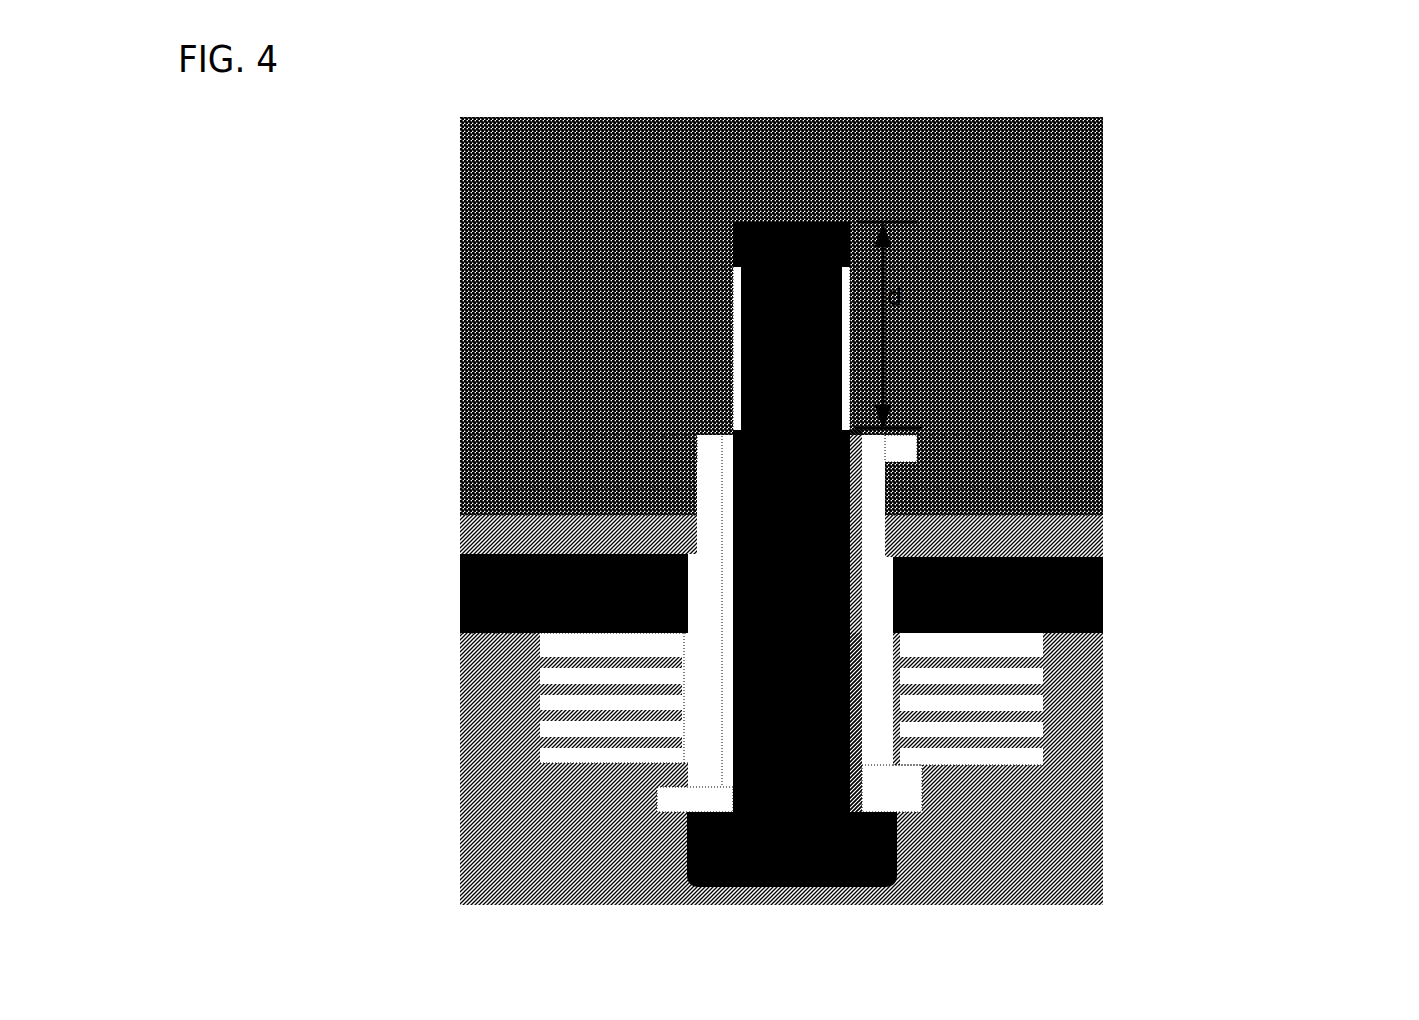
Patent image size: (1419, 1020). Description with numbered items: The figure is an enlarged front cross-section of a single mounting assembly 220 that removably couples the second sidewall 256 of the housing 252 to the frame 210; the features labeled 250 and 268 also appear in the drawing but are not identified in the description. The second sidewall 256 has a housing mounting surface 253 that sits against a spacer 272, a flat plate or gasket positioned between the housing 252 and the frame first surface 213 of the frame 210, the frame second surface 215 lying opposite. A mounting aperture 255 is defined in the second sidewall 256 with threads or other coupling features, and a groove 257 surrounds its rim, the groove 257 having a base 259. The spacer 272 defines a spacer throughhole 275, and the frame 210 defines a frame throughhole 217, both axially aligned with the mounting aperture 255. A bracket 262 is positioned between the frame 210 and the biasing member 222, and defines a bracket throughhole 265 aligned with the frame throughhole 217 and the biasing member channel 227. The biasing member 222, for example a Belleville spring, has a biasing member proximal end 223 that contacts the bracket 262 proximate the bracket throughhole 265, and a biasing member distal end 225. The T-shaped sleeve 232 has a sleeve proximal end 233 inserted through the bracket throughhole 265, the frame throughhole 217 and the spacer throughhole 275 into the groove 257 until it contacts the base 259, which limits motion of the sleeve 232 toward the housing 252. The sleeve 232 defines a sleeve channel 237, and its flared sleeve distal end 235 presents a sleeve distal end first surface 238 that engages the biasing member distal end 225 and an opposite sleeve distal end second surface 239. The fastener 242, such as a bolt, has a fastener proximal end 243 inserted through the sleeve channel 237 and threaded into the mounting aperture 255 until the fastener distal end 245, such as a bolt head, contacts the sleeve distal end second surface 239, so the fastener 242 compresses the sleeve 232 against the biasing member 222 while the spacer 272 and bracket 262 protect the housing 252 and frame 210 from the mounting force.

The upper housing assembly 250 is at (1046, 106).
The housing 252 is at (507, 172).
The mounting aperture 255 is at (735, 298).
The base of the groove 259 is at (703, 425).
The spacer throughhole 275 is at (693, 492).
The frame throughhole 217 is at (690, 528).
The spacer 272 is at (525, 492).
The interface layer 268 is at (500, 510).
The frame first surface 213 is at (475, 518).
The lower housing 210 is at (465, 540).
The frame second surface 215 is at (505, 557).
The bracket 262 is at (487, 617).
The biasing member proximal end 223 is at (577, 648).
The biasing member channel 227 is at (683, 677).
The biasing member 222 is at (563, 735).
The biasing member distal end 225 is at (637, 767).
The sleeve 232 is at (690, 748).
The sleeve distal end 235 is at (683, 790).
The fastener 242 is at (730, 855).
The fastener distal end 245 is at (847, 858).
The fastener proximal end 243 is at (812, 353).
The groove 257 is at (888, 445).
The second sidewall 256 is at (1032, 472).
The housing mounting surface 253 is at (1008, 488).
The sleeve proximal end 233 is at (877, 523).
The bracket throughhole 265 is at (897, 573).
The sleeve channel 237 is at (855, 653).
The sleeve distal end first surface 238 is at (912, 772).
The sleeve distal end second surface 239 is at (905, 813).
The mounting assembly 220 is at (1285, 593).